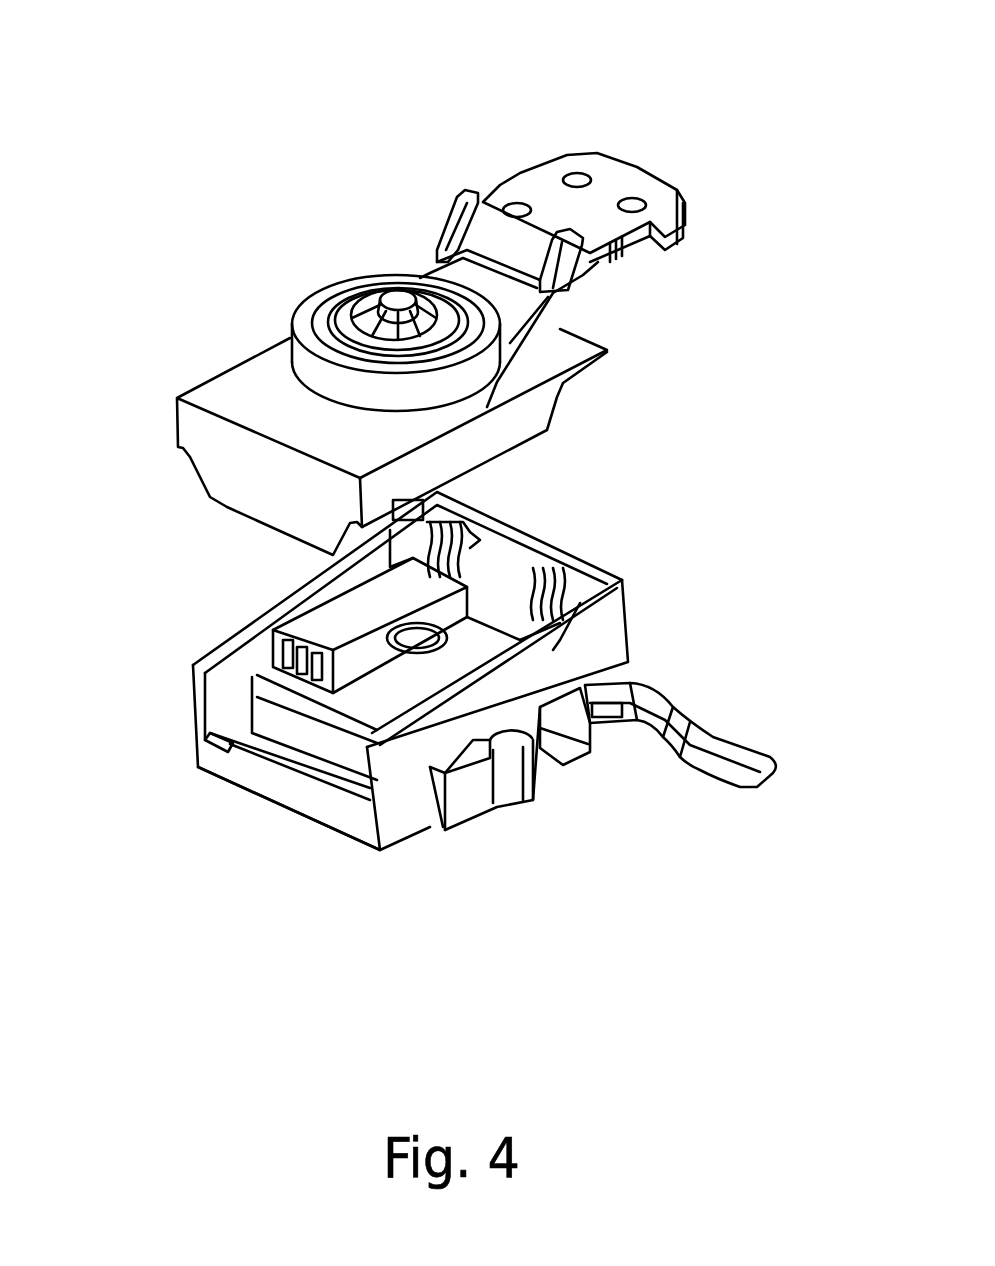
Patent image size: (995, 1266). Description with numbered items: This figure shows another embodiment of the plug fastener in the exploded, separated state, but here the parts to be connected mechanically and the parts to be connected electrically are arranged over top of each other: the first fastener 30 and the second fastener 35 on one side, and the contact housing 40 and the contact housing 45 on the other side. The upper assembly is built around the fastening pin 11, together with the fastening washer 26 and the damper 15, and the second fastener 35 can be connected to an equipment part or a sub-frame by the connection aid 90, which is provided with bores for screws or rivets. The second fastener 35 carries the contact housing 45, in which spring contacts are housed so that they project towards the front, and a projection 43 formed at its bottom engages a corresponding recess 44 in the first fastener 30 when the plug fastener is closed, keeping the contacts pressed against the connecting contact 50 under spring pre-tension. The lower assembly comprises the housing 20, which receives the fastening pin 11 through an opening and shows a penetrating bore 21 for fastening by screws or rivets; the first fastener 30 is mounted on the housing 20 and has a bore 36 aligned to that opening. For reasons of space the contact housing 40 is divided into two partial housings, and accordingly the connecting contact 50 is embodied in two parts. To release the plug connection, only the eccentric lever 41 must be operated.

The fastening pin 11 is at (398, 297).
The damper 15 is at (320, 297).
The fastening washer 26 is at (348, 285).
The second fastener 35 is at (240, 393).
The projection 43 is at (262, 497).
The contact housing 45 is at (565, 407).
The connection aid 90 is at (606, 190).
The connecting contact 50 is at (620, 572).
The first fastener 30 is at (597, 630).
The contact housing 40 is at (345, 626).
The recess 44 is at (228, 748).
The bore 36 is at (378, 662).
The housing 20 is at (512, 777).
The penetrating bore 21 is at (563, 770).
The eccentric lever 41 is at (737, 750).